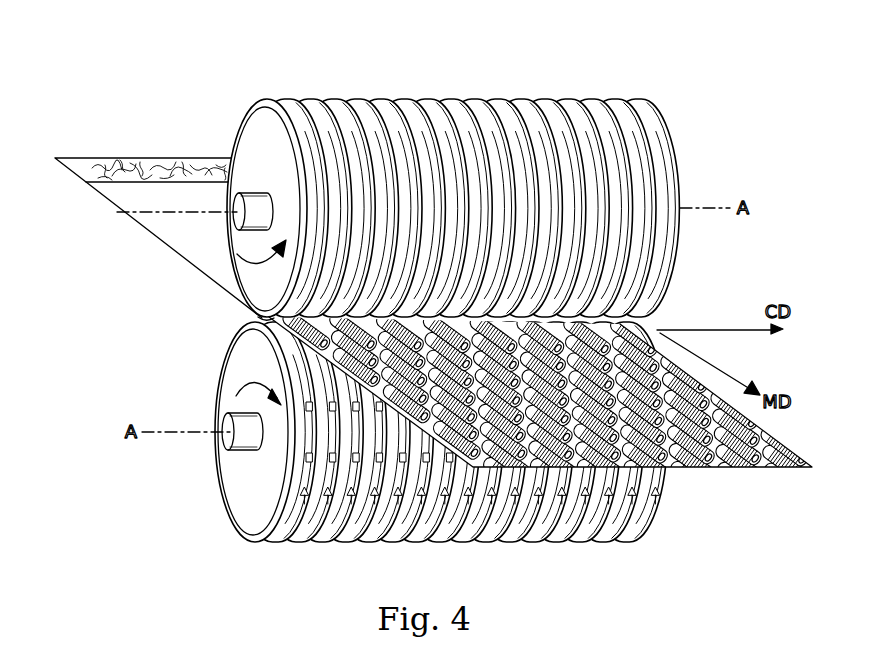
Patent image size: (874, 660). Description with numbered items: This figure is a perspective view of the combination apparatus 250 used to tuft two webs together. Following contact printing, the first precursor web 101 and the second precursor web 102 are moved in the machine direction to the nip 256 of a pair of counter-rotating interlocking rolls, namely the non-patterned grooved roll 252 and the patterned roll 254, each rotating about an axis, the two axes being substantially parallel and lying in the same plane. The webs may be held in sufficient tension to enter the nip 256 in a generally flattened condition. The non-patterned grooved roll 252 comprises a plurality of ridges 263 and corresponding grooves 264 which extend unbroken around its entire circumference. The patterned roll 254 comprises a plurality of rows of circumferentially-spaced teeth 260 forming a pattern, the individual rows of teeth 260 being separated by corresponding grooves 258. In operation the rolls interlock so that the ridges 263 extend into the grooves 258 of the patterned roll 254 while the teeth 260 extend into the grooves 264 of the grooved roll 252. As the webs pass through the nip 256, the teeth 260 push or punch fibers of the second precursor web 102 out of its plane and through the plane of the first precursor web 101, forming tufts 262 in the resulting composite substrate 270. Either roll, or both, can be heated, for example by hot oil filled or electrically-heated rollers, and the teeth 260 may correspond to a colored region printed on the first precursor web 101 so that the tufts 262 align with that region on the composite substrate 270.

The first precursor web 101 is at (112, 197).
The second precursor web 102 is at (115, 163).
The combination apparatus 250 is at (462, 66).
The non-patterned grooved roll 252 is at (415, 171).
The patterned roll 254 is at (399, 469).
The nip 256 is at (241, 317).
The grooves of patterned roll 258 is at (637, 518).
The teeth 260 is at (278, 544).
The tufts 262 is at (565, 421).
The ridges 263 is at (277, 98).
The grooves of non-patterned grooved roll 264 is at (632, 107).
The composite substrate 270 is at (773, 443).